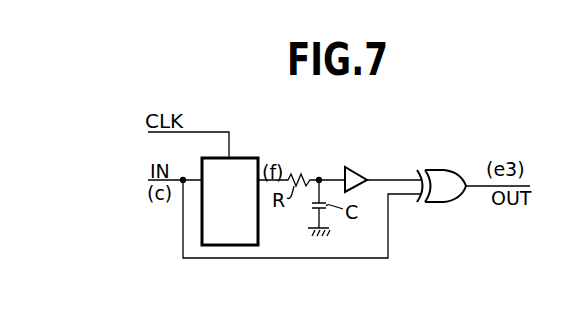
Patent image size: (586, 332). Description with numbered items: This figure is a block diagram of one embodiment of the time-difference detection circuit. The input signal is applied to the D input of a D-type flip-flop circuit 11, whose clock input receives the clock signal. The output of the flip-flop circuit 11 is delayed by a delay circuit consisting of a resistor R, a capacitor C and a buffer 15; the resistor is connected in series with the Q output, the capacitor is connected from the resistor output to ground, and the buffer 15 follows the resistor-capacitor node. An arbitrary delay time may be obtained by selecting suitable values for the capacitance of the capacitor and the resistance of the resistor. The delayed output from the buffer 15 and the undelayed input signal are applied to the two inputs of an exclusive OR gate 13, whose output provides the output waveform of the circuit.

The flip-flop circuit 11 is at (230, 245).
The exclusive OR gate 13 is at (438, 170).
The buffer 15 is at (366, 174).